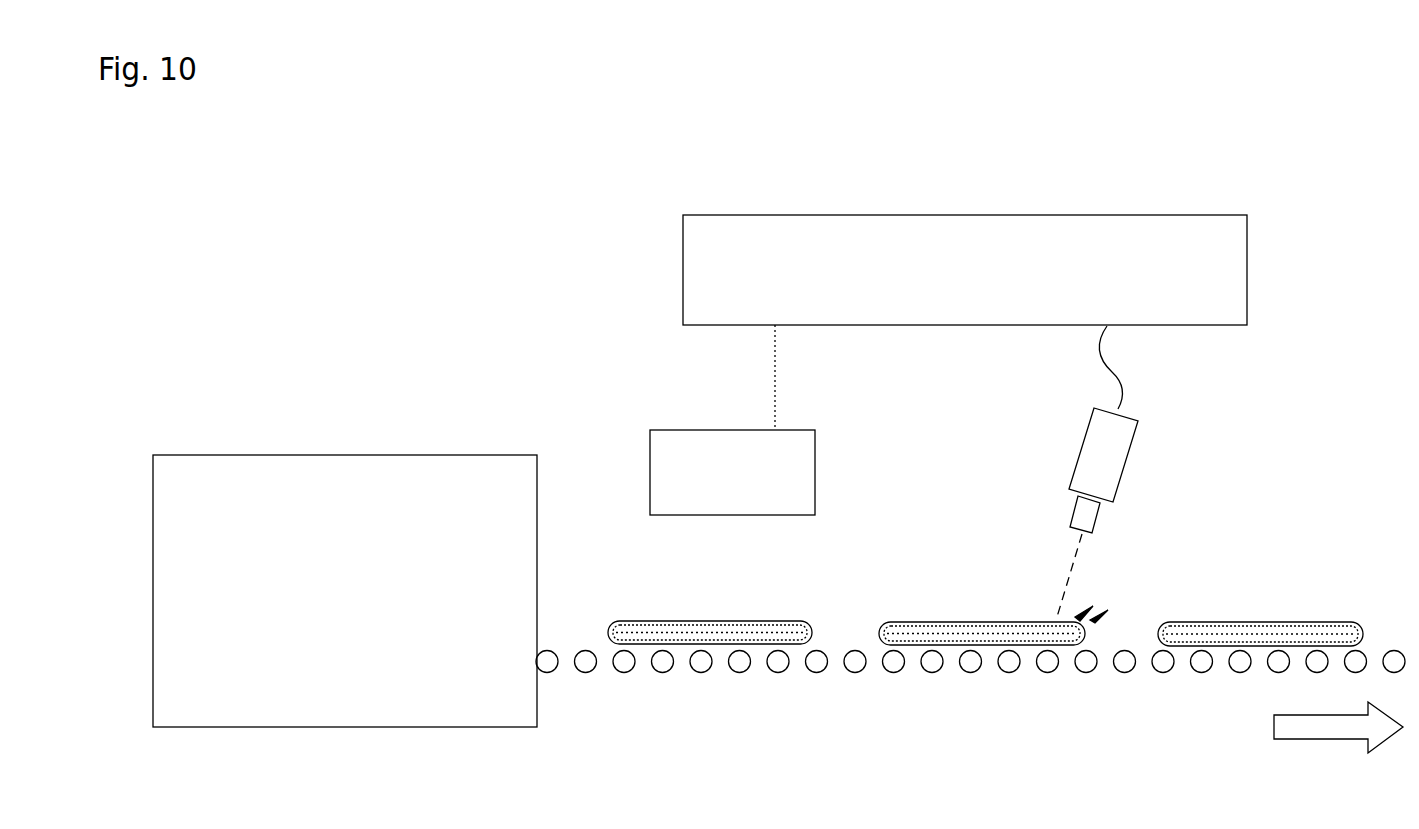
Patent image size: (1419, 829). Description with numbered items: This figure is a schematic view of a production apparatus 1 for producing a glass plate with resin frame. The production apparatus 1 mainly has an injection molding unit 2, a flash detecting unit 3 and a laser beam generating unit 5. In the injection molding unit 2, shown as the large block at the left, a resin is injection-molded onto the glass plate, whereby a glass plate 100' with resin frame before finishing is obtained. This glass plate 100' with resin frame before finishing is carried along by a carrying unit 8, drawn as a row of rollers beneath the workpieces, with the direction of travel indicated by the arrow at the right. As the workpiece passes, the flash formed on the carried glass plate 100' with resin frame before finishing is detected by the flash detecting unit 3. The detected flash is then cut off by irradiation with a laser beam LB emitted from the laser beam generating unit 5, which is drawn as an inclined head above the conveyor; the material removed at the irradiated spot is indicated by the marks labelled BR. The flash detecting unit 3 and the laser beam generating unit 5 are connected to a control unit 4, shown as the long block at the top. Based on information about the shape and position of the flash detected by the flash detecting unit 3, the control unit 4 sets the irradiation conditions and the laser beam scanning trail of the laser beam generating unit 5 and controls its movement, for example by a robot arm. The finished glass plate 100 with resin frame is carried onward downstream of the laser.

The production apparatus 1 is at (1327, 173).
The injection molding unit 2 is at (345, 455).
The flash detecting unit 3 is at (690, 430).
The control unit 4 is at (963, 215).
The laser beam generating unit 5 is at (1135, 440).
The carrying unit 8 is at (900, 702).
The glass plate with resin frame 100 is at (1260, 604).
The glass plate with resin frame before finishing 100' is at (846, 603).
The laser beam LB is at (1098, 551).
The burr / spatter BR is at (1128, 614).